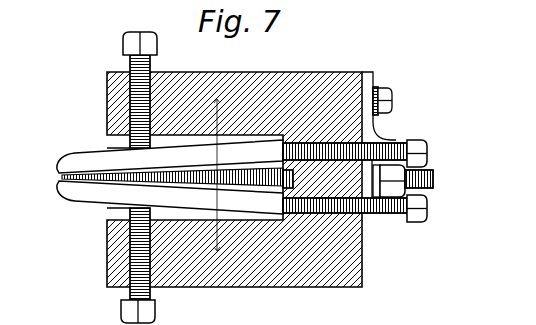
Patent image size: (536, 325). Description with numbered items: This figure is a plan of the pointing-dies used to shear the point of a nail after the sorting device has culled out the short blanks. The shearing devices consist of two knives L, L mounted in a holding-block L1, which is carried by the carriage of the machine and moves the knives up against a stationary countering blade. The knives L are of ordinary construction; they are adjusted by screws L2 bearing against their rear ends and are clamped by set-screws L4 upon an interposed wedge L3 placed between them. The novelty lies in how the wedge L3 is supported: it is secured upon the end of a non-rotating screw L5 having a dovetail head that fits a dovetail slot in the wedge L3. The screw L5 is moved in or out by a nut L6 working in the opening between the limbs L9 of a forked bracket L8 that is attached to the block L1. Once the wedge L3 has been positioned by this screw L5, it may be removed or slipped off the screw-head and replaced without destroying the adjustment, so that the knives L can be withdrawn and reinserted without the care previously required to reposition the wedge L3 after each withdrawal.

The knives L is at (68, 156).
The holding-block L1 is at (268, 284).
The screws L2 is at (430, 143).
The wedge L3 is at (238, 180).
The set-screws L4 is at (147, 63).
The non-rotating screw L5 is at (433, 178).
The nut L6 is at (393, 155).
The forked bracket L8 is at (376, 88).
The limbs L9 is at (398, 197).